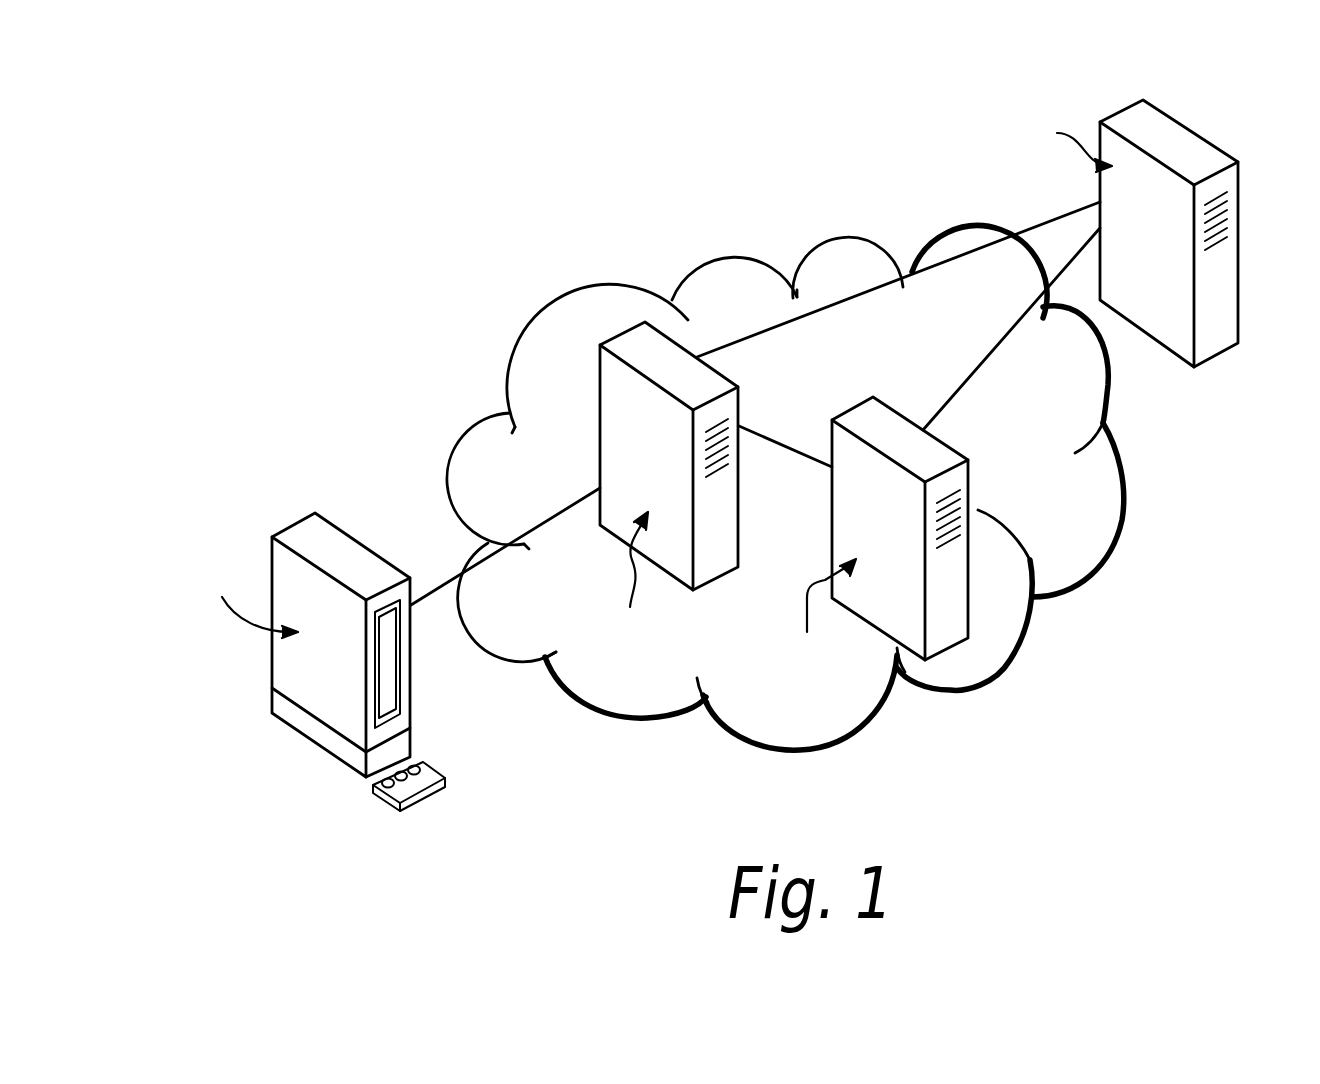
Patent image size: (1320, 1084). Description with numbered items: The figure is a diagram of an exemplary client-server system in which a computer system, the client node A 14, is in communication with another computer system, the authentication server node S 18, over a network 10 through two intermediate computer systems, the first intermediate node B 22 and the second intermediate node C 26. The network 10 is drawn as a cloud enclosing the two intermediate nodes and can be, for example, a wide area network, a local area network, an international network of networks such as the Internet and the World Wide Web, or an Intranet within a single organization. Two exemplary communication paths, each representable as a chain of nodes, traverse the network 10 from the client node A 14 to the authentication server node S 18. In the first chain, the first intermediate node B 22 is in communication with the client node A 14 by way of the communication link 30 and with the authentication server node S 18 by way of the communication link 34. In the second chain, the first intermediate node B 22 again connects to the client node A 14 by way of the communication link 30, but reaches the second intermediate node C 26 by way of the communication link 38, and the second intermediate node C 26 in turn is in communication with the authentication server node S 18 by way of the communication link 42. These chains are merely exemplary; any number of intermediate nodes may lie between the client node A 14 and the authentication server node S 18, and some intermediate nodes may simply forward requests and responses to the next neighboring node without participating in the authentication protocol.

The network 10 is at (612, 290).
The client node A 14 is at (344, 533).
The authentication server node S 18 is at (1198, 133).
The first intermediate node B 22 is at (637, 352).
The second intermediate node C 26 is at (958, 447).
The communication link 30 is at (487, 548).
The communication link 34 is at (815, 306).
The communication link 38 is at (782, 444).
The communication link 42 is at (988, 360).